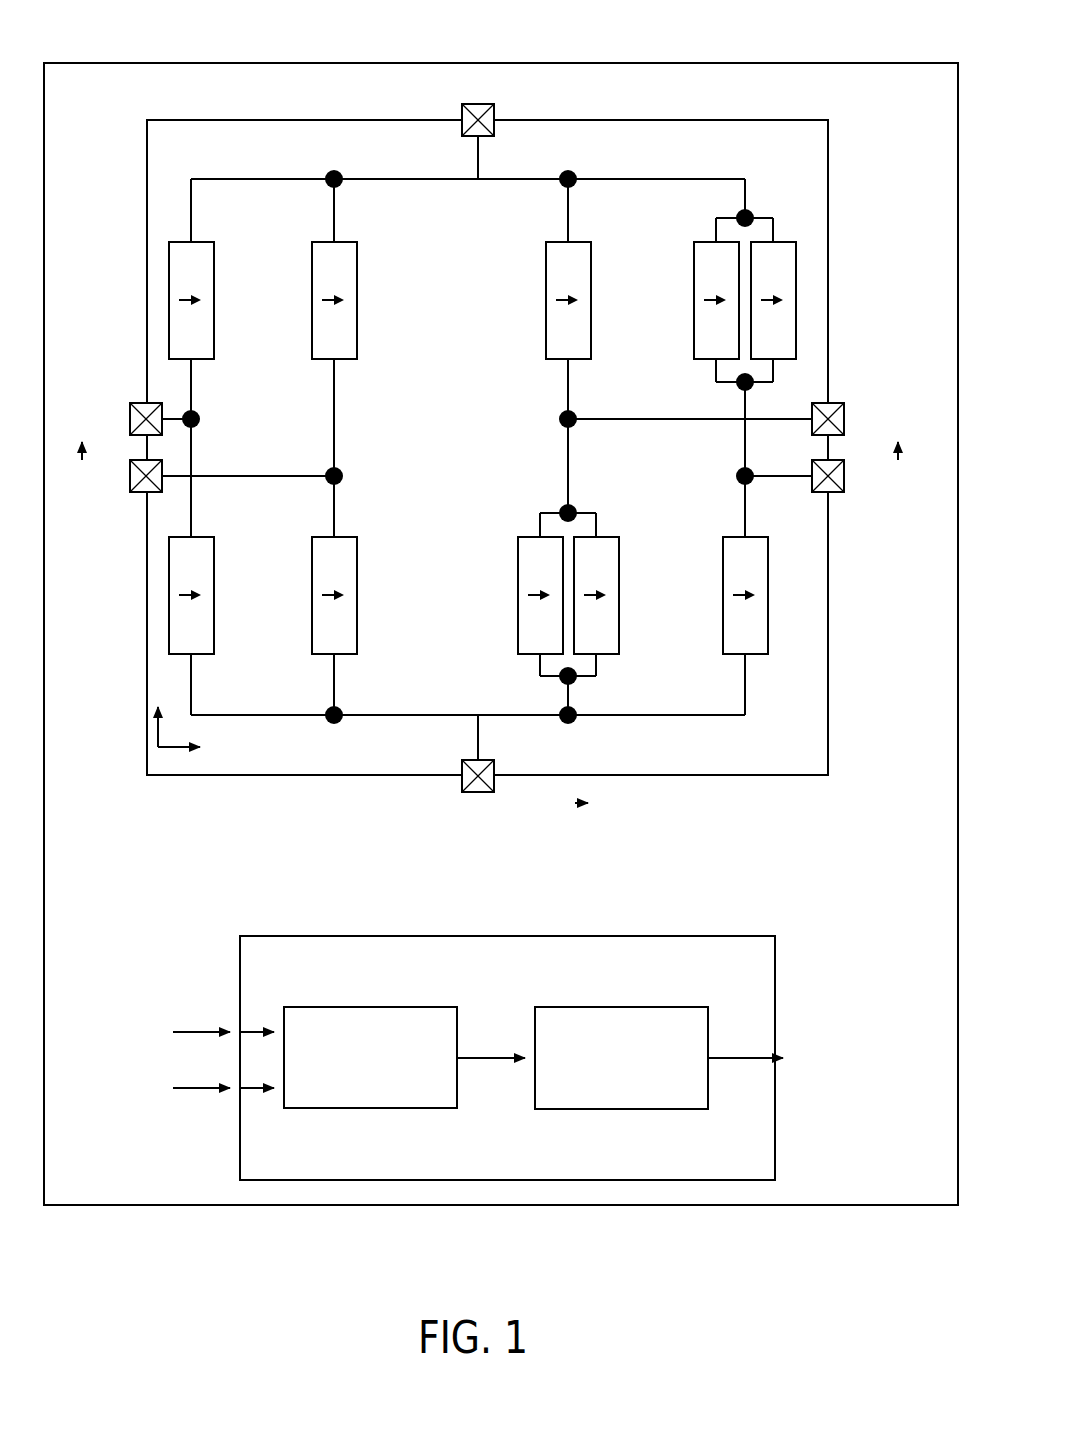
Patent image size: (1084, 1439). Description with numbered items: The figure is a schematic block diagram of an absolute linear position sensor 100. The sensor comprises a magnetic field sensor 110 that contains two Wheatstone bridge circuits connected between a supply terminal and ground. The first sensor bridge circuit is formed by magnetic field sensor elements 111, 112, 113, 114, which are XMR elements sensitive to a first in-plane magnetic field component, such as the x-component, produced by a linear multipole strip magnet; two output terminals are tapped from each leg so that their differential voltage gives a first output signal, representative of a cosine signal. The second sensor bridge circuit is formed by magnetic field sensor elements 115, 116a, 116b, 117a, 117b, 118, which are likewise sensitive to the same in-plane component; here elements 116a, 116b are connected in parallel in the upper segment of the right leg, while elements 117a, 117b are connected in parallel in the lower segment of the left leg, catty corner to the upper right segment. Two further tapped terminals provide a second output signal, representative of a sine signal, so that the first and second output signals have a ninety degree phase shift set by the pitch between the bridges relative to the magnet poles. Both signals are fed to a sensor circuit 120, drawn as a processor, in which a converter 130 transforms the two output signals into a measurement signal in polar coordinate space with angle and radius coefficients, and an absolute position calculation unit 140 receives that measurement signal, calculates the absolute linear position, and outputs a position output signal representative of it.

The absolute linear position sensor 100 is at (221, 63).
The magnetic field sensor 110 is at (290, 120).
The magnetic field sensor element 111 is at (213, 300).
The magnetic field sensor element 112 is at (357, 300).
The magnetic field sensor element 113 is at (213, 595).
The magnetic field sensor element 114 is at (357, 608).
The magnetic field sensor element 115 is at (545, 300).
The magnetic field sensor element 116a is at (694, 300).
The magnetic field sensor element 116b is at (796, 300).
The magnetic field sensor element 117a is at (518, 569).
The magnetic field sensor element 117b is at (618, 612).
The magnetic field sensor element 118 is at (723, 572).
The sensor circuit 120 is at (315, 936).
The converter 130 is at (382, 1007).
The absolute position calculation unit 140 is at (620, 1007).